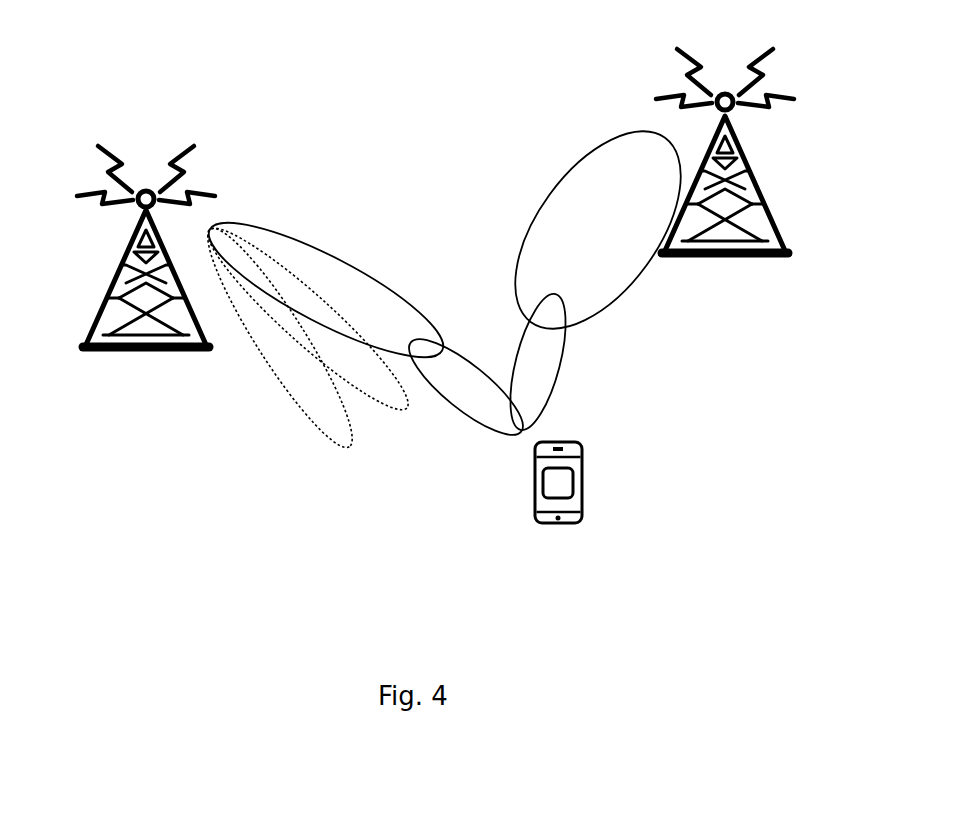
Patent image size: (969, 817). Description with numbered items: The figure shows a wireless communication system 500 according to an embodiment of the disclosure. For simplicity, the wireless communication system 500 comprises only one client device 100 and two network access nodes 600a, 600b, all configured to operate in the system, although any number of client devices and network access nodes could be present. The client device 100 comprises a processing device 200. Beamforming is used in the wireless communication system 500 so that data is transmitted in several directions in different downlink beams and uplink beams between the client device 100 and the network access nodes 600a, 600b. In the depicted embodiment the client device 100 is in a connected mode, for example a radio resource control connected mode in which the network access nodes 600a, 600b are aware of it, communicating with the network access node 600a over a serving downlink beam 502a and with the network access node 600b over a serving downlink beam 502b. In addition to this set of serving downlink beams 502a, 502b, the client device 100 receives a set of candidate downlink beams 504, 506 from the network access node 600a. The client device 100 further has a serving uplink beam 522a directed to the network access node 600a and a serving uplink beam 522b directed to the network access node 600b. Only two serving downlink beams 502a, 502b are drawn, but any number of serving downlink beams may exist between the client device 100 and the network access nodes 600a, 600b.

The wireless communication system 500 is at (175, 50).
The client device 100 is at (588, 506).
The processing device 200 is at (582, 485).
The serving downlink beam 502a is at (332, 263).
The serving downlink beam 502b is at (545, 207).
The candidate downlink beam 504 is at (392, 422).
The candidate downlink beam 506 is at (307, 418).
The serving uplink beam 522a is at (485, 418).
The serving uplink beam 522b is at (552, 395).
The network access node 600a is at (110, 353).
The network access node 600b is at (693, 258).